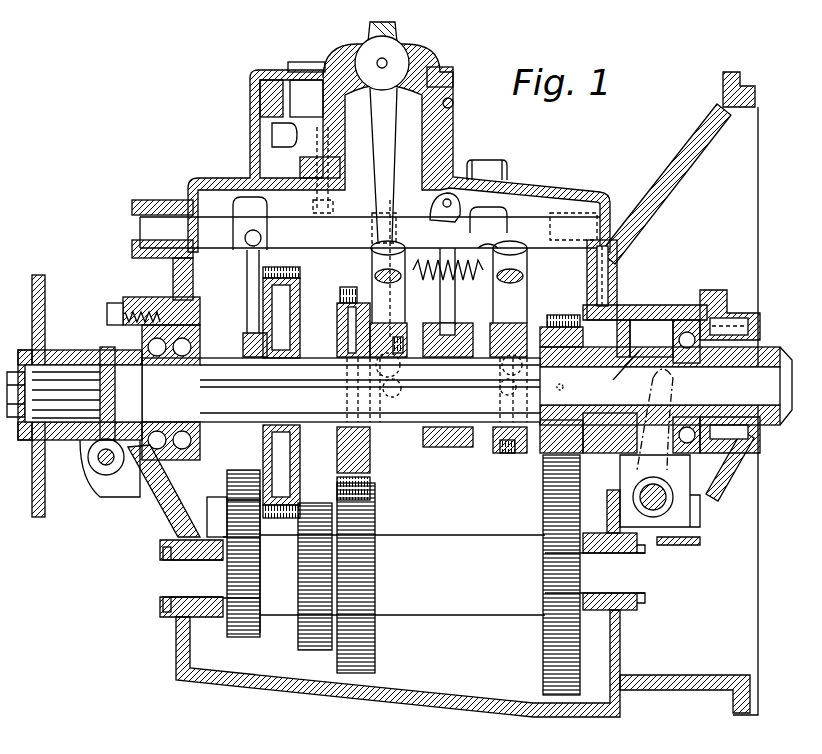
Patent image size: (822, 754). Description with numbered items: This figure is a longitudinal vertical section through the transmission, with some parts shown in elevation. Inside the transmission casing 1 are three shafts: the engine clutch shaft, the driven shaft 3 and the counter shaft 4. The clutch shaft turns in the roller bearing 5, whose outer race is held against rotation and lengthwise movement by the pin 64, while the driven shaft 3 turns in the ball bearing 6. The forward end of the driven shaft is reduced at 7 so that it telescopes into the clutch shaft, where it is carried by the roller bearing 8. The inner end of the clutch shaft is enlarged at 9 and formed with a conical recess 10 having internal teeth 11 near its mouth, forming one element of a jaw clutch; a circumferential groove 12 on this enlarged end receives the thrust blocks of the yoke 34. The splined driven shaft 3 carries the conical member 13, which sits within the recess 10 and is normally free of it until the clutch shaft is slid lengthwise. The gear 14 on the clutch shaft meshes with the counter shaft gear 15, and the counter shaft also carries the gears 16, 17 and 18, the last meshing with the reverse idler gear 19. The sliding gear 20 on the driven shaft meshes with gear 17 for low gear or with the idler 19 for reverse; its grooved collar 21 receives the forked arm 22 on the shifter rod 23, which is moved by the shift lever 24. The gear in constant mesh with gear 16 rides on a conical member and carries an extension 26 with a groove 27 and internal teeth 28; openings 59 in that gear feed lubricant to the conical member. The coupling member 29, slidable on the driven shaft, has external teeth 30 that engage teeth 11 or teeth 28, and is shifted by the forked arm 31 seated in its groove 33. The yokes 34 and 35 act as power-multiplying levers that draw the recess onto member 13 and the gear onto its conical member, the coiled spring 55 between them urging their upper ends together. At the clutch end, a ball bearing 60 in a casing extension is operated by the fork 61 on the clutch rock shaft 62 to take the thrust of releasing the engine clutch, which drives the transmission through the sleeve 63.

The transmission casing 1 is at (508, 197).
The driven shaft 3 is at (465, 432).
The counter shaft 4 is at (402, 561).
The roller bearing 5 is at (638, 320).
The ball bearing 6 is at (157, 357).
The reduced end 7 is at (632, 358).
The roller bearing 8 is at (555, 340).
The enlarged end 9 is at (602, 410).
The conical recess 10 is at (562, 478).
The teeth 11 is at (490, 348).
The circumferentially extending groove 12 is at (505, 460).
The conical member 13 is at (490, 468).
The gear 14 is at (567, 315).
The counter shaft gear 15 is at (543, 510).
The gear 16 is at (375, 590).
The gear 17 is at (315, 650).
The gear 18 is at (247, 637).
The reverse idler gear 19 is at (238, 472).
The gear 20 is at (294, 286).
The grooved collar 21 is at (242, 340).
The arm 22 is at (246, 282).
The shifter rod 23 is at (366, 225).
The shift lever 24 is at (368, 33).
The extension 26 is at (410, 470).
The circumferentially extending groove 27 is at (385, 462).
The teeth 28 is at (443, 379).
The coupling member 29 is at (462, 455).
The external teeth 30 is at (457, 325).
The arm 31 is at (444, 298).
The groove 33 is at (443, 447).
The yoke 34 is at (527, 272).
The yoke 35 is at (372, 272).
The coiled spring 55 is at (428, 258).
The openings 59 is at (337, 320).
The ball bearing 60 is at (684, 325).
The fork 61 is at (678, 420).
The clutch rock shaft 62 is at (672, 497).
The sleeve 63 is at (479, 412).
The pin 64 is at (606, 246).